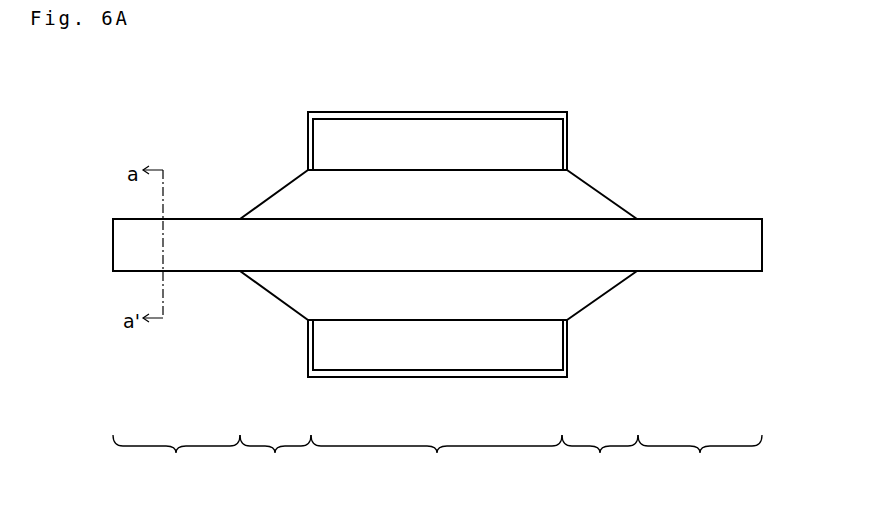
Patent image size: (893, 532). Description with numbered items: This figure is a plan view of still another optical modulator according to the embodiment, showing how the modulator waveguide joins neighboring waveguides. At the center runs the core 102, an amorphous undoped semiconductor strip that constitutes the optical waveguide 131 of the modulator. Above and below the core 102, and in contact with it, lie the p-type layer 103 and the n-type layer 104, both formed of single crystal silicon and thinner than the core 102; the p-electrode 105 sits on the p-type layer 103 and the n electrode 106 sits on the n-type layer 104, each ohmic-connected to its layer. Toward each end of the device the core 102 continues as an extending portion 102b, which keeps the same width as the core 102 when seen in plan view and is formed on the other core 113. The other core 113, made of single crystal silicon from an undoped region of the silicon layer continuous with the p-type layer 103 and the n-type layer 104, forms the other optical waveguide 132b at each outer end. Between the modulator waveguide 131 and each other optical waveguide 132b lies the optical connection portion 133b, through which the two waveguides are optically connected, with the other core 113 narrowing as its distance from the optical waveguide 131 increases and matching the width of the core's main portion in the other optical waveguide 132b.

The core 102 is at (358, 257).
The extending portion 102b is at (714, 291).
The p-type layer 103 is at (481, 193).
The n-type layer 104 is at (502, 298).
The p-electrode 105 is at (557, 140).
The n electrode 106 is at (555, 349).
The other core 113 is at (710, 219).
The optical waveguide 131 is at (436, 458).
The other optical waveguide 132b is at (437, 458).
The optical connection portion 133b is at (439, 458).